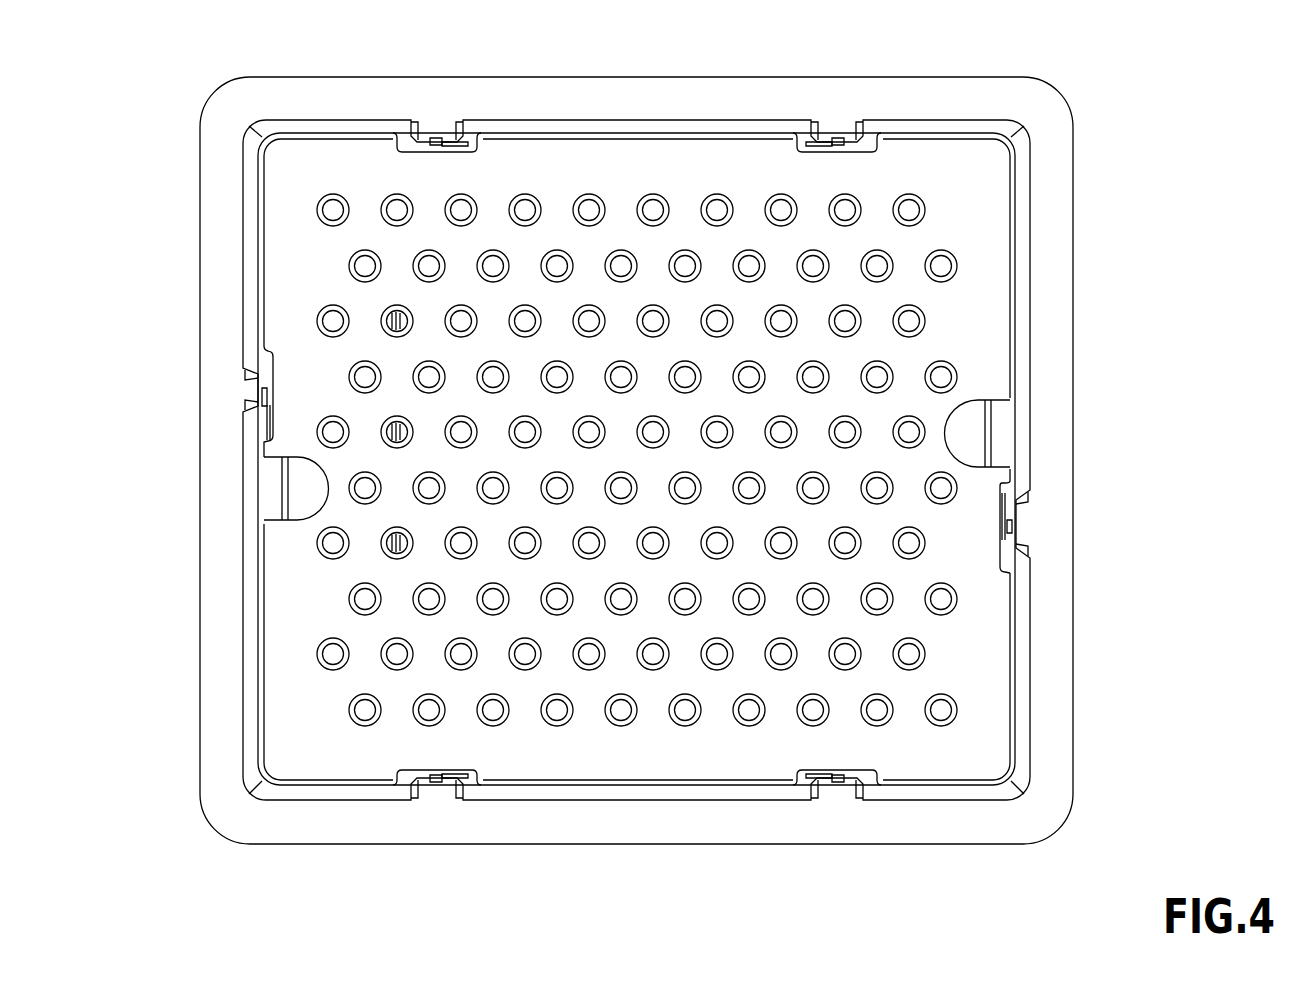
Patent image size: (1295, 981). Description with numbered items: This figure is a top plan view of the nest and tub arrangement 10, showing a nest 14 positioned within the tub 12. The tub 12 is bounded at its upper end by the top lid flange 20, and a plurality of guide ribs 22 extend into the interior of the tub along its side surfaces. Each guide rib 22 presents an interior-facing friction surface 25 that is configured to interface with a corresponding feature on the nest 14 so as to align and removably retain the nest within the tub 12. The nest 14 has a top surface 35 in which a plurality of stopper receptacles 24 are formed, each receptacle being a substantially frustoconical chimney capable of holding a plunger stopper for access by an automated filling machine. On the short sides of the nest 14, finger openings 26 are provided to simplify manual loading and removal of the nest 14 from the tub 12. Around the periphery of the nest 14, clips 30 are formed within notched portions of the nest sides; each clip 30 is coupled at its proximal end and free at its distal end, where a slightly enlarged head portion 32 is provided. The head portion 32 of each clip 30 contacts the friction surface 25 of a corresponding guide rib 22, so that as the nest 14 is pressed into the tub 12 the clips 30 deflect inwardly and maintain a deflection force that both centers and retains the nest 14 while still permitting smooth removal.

The nest and tub arrangement 10 is at (150, 88).
The tub 12 is at (1050, 695).
The nest 14 is at (963, 204).
The top lid flange 20 is at (270, 90).
The guide rib 22 is at (434, 130).
The stopper receptacle 24 is at (350, 713).
The friction surface 25 is at (422, 146).
The finger opening 26 is at (275, 522).
The clip 30 is at (465, 147).
The head portion 32 is at (440, 138).
The top surface 35 is at (275, 196).